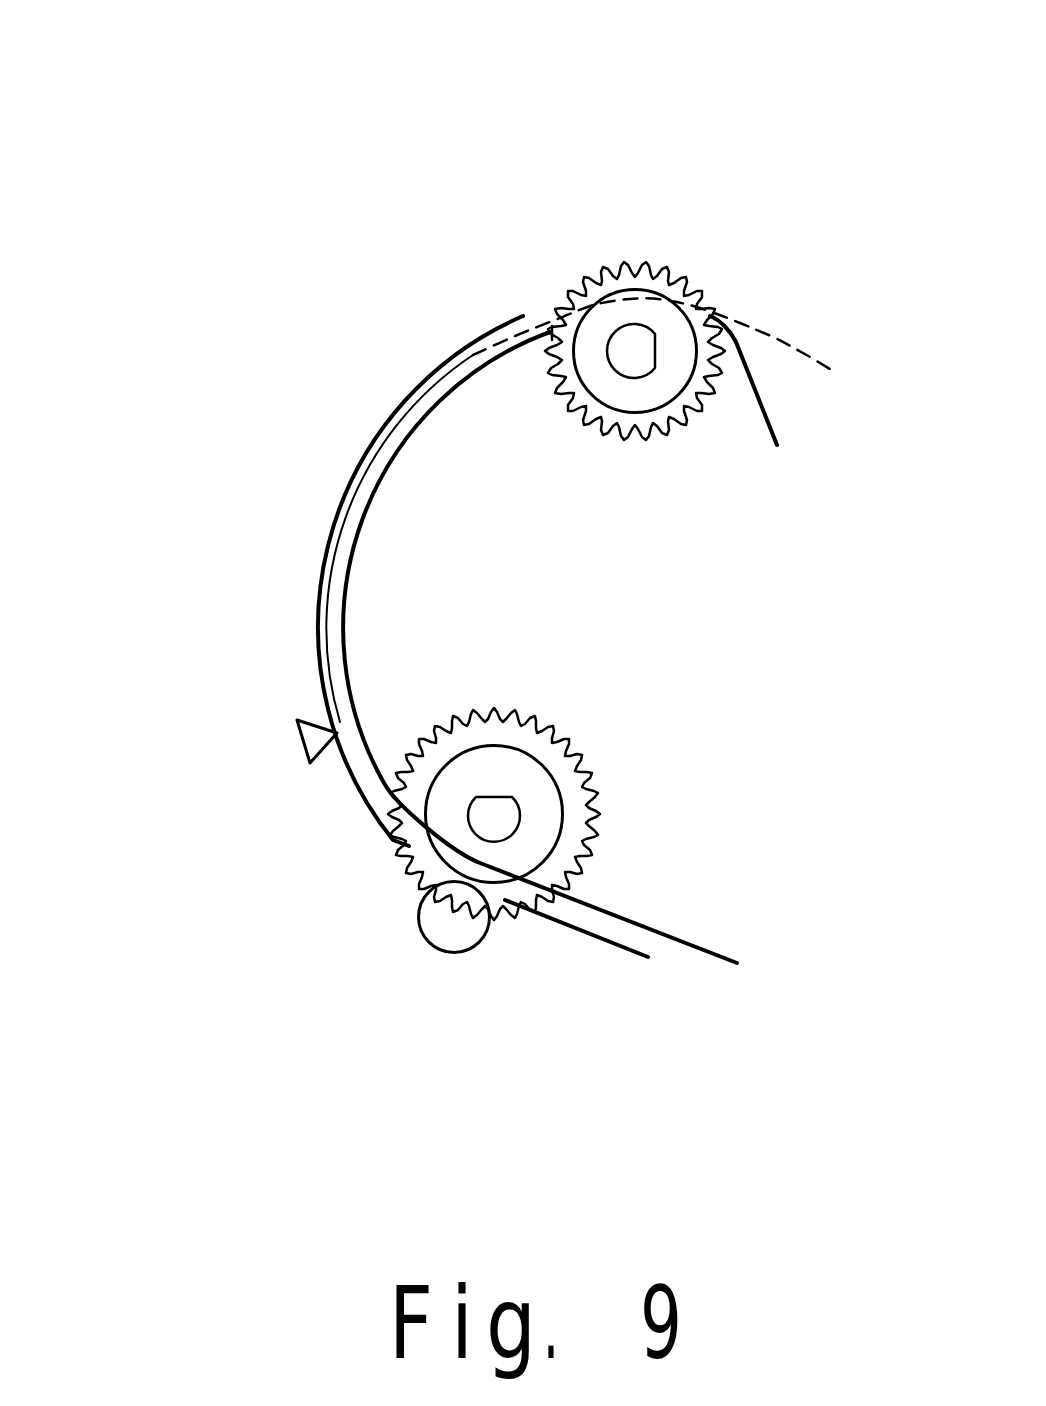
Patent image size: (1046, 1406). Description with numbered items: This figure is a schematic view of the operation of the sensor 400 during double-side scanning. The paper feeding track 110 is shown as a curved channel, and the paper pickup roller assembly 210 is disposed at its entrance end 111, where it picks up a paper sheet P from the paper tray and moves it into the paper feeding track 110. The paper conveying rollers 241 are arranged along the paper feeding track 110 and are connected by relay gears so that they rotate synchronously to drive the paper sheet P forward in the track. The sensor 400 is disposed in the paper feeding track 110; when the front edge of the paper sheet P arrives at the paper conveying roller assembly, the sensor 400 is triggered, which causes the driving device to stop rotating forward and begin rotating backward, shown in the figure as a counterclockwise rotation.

The paper feeding track 110 is at (443, 481).
The entrance end 111 is at (523, 316).
The paper pickup roller assembly 210 is at (541, 414).
The paper conveying rollers 241 is at (477, 821).
The sensor 400 is at (306, 745).
The paper sheet P is at (480, 353).